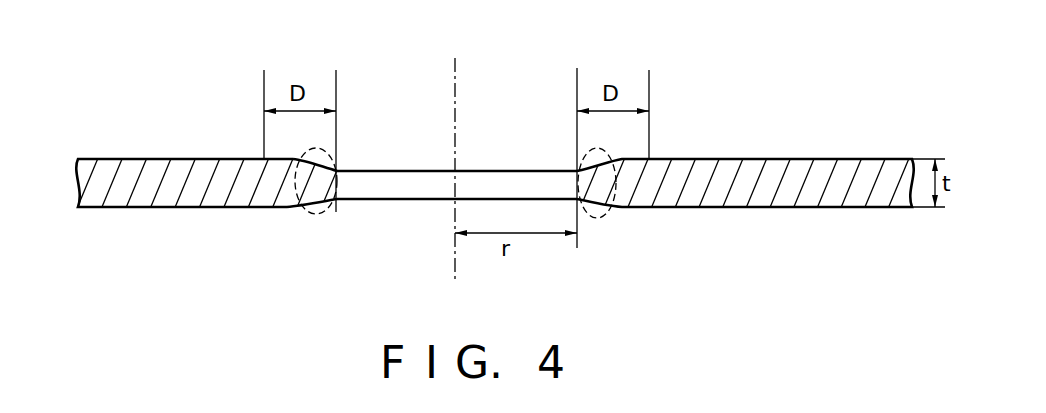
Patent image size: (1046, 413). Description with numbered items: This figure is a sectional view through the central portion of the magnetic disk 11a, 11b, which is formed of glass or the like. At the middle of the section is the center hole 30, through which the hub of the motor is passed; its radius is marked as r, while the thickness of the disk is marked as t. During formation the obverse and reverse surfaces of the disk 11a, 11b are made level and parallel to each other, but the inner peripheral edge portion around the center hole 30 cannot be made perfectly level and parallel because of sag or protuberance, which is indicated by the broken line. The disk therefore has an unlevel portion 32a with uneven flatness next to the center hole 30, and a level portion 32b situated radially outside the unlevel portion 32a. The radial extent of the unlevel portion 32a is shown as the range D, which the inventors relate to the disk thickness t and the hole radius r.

The magnetic disk 11a is at (493, 169).
The magnetic disk 11b is at (733, 169).
The center hole 30 is at (337, 188).
The unlevel portion 32a is at (298, 208).
The level portion 32b is at (818, 208).